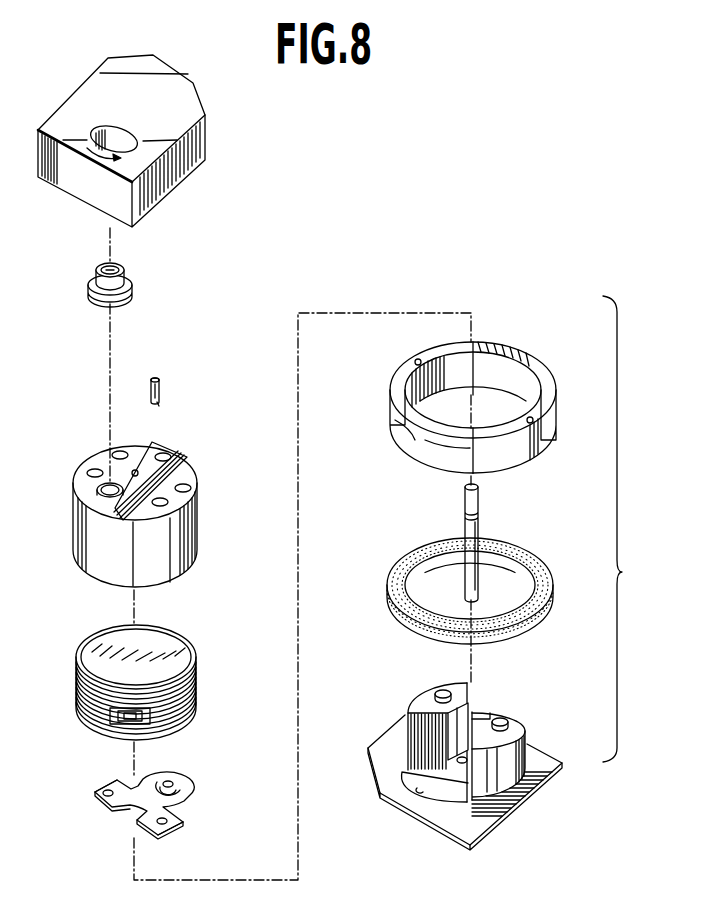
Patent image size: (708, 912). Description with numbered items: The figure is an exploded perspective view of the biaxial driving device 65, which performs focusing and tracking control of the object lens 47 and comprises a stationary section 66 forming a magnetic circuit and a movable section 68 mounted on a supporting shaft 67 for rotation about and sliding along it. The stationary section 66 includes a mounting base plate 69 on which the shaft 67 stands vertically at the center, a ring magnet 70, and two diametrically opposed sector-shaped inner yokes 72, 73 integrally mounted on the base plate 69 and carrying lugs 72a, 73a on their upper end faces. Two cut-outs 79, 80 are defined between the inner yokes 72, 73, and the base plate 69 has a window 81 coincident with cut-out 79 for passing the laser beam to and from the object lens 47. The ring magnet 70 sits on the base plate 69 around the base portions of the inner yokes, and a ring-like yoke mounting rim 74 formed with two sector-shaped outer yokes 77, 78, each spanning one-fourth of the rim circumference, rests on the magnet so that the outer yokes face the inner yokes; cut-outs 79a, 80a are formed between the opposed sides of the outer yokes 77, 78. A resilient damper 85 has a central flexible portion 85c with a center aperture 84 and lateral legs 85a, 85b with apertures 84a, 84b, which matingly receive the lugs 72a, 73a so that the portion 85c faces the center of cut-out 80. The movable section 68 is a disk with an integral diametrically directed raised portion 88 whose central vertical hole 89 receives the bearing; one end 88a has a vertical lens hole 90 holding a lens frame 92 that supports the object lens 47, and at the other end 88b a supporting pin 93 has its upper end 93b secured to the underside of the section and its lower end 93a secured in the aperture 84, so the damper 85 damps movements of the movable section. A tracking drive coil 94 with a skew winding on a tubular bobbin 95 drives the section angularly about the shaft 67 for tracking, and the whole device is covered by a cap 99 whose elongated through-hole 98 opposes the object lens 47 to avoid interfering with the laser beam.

The elongated through-hole 98 is at (101, 129).
The cap 99 is at (190, 158).
The object lens 47 is at (100, 265).
The lens frame 92 is at (92, 295).
The supporting pin 93 is at (160, 386).
The lower end of supporting pin 93a is at (157, 400).
The upper end of supporting pin 93b is at (153, 377).
The tubular bobbin 95 is at (193, 530).
The movable section 68 is at (177, 450).
The vertical lens hole 90 is at (100, 488).
The raised portion 88 is at (100, 497).
The one end of raised portion 88a is at (108, 507).
The other end of raised portion 88b is at (158, 442).
The central vertical hole 89 is at (133, 471).
The tracking drive coil 94 is at (197, 688).
The center aperture 84 is at (172, 780).
The aperture 84a is at (102, 783).
The aperture 84b is at (143, 827).
The damper 85 is at (242, 801).
The lateral leg 85a is at (103, 805).
The lateral leg 85b is at (180, 825).
The central flexible portion 85c is at (163, 778).
The biaxial driving device 65 is at (226, 295).
The stationary section 66 is at (628, 529).
The outer yoke 77 is at (398, 382).
The outer yoke 78 is at (535, 452).
The cut-out 80a is at (500, 365).
The yoke mounting rim 74 is at (403, 443).
The cut-out 79a is at (433, 440).
The supporting shaft 67 is at (480, 525).
The ring magnet 70 is at (545, 565).
The mounting base plate 69 is at (460, 823).
The inner yoke 72 is at (418, 703).
The lug 72a is at (440, 686).
The inner yoke 73 is at (520, 747).
The lug 73a is at (507, 712).
The cut-out 79 is at (418, 728).
The cut-out 80 is at (478, 705).
The window 81 is at (420, 789).